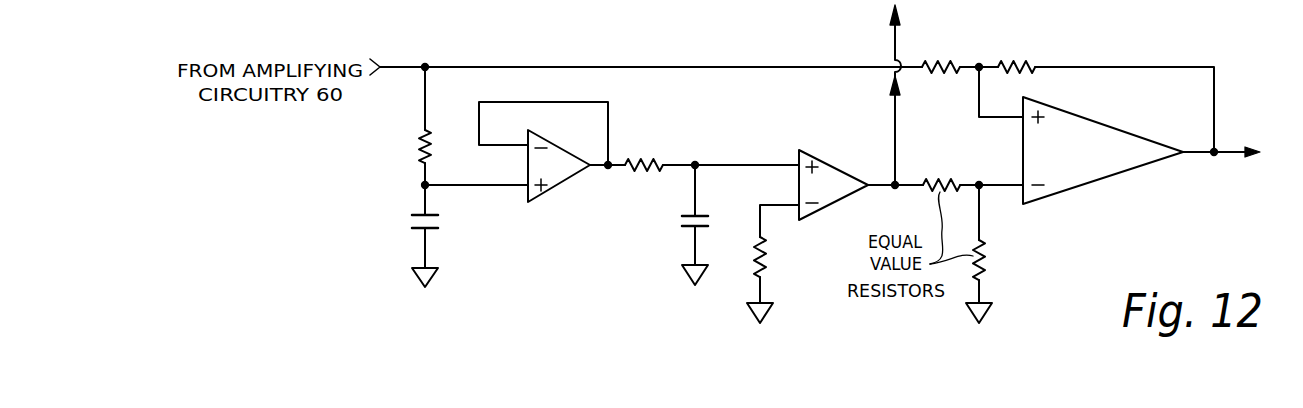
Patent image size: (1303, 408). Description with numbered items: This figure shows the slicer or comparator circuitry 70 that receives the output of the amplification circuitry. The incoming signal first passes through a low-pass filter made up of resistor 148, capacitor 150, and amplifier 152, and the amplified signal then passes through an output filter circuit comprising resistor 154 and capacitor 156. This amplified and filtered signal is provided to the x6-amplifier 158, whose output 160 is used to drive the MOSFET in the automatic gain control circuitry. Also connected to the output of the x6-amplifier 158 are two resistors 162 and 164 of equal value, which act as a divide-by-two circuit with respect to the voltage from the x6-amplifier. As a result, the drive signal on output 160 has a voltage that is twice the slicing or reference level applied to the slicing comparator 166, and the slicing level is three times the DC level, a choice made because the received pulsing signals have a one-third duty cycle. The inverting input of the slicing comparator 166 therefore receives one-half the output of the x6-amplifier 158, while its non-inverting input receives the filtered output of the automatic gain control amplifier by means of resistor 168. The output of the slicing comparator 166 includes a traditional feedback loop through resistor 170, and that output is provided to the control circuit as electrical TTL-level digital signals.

The slicer or comparator circuitry 70 is at (700, 47).
The resistor 148 is at (418, 134).
The capacitor 150 is at (413, 220).
The amplifier 152 is at (562, 184).
The resistor 154 is at (652, 157).
The capacitor 156 is at (680, 220).
The x6-amplifier 158 is at (830, 205).
The output 160 is at (893, 137).
The resistor 162 is at (938, 180).
The resistor 164 is at (988, 255).
The slicing comparator 166 is at (1090, 183).
The resistor 168 is at (927, 62).
The resistor 170 is at (1012, 62).